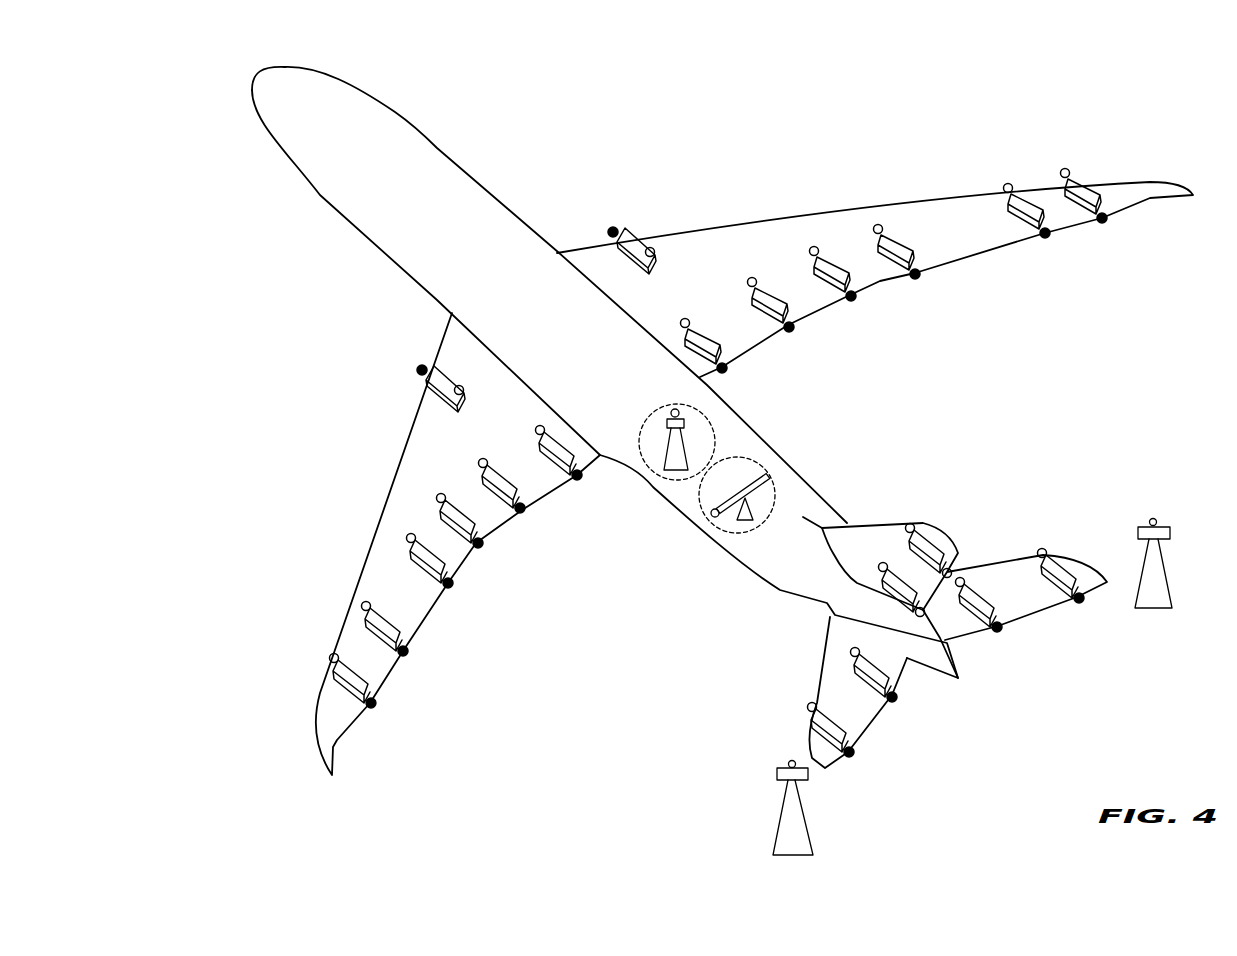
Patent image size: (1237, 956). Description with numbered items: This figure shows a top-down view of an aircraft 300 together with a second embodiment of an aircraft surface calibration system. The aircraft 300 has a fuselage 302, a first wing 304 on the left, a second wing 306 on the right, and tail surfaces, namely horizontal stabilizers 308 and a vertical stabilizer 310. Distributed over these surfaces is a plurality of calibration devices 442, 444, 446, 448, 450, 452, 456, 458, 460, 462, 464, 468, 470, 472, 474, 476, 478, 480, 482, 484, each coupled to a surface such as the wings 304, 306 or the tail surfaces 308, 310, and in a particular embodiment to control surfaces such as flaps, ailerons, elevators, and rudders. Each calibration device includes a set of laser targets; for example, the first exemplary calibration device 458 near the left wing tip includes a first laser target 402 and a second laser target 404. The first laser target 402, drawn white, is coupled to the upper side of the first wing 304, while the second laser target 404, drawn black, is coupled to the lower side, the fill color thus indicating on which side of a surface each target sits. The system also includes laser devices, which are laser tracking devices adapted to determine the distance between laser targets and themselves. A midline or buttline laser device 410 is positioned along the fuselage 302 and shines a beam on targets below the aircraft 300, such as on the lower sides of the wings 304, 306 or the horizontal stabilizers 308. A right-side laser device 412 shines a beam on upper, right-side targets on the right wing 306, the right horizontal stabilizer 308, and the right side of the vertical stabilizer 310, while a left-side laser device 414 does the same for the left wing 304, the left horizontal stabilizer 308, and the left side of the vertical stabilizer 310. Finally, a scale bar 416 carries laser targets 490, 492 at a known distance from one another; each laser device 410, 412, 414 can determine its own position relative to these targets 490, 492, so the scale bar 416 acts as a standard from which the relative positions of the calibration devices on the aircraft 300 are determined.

The aircraft 300 is at (541, 122).
The fuselage 302 is at (258, 113).
The first wing 304 is at (332, 487).
The second wing 306 is at (800, 175).
The horizontal stabilizers 308 is at (1010, 743).
The vertical stabilizer 310 is at (866, 490).
The first laser target 402 is at (330, 656).
The second laser target 404 is at (376, 706).
The buttline laser device 410 is at (685, 442).
The right-side laser device 412 is at (1178, 580).
The left-side laser device 414 is at (773, 847).
The scale bar 416 is at (735, 518).
The calibration device 442 is at (423, 388).
The calibration device 444 is at (636, 240).
The calibration device 446 is at (567, 443).
The calibration device 448 is at (495, 467).
The calibration device 450 is at (480, 527).
The calibration device 452 is at (443, 567).
The calibration device 456 is at (405, 637).
The first exemplary calibration device 458 is at (345, 688).
The calibration device 460 is at (693, 348).
The calibration device 462 is at (757, 303).
The calibration device 464 is at (817, 266).
The calibration device 468 is at (910, 258).
The calibration device 470 is at (1007, 208).
The calibration device 472 is at (1087, 183).
The calibration device 474 is at (860, 673).
The calibration device 476 is at (840, 726).
The calibration device 478 is at (1003, 623).
The calibration device 480 is at (1067, 562).
The calibration device 482 is at (930, 535).
The calibration device 484 is at (887, 583).
The laser target 490 is at (760, 475).
The laser target 492 is at (703, 516).